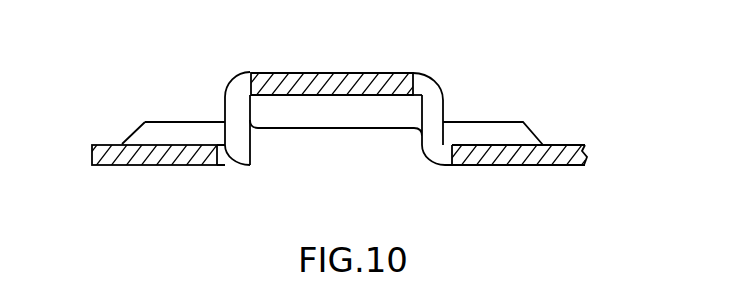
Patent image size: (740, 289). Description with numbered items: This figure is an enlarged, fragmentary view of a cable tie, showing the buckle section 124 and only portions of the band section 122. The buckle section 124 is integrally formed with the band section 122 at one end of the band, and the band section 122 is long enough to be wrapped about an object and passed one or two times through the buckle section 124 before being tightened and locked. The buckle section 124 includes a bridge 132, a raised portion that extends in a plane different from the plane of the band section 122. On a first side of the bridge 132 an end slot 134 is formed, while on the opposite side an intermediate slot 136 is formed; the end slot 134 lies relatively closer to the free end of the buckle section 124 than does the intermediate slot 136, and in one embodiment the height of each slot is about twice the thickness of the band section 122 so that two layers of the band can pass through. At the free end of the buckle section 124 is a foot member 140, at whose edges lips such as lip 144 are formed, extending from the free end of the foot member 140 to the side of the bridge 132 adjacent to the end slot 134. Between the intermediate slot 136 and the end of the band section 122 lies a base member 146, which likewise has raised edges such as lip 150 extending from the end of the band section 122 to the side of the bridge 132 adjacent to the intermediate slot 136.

The band section 122 is at (537, 165).
The buckle section 124 is at (416, 74).
The bridge 132 is at (320, 73).
The end slot 134 is at (237, 113).
The intermediate slot 136 is at (432, 127).
The foot member 140 is at (187, 154).
The lip 144 is at (150, 132).
The base member 146 is at (462, 160).
The lip 150 is at (500, 125).